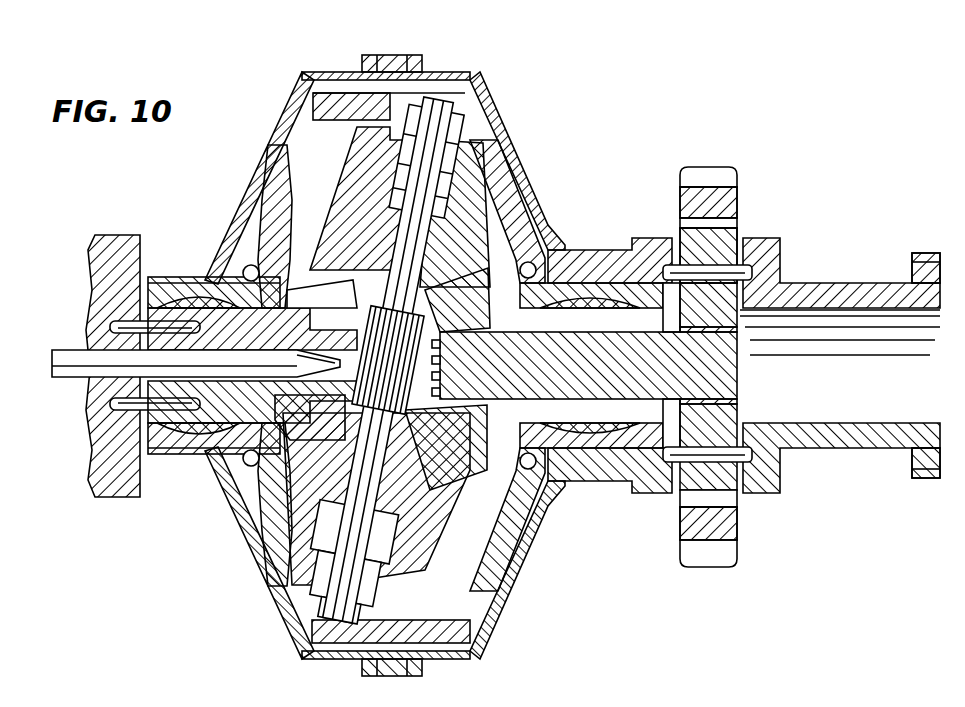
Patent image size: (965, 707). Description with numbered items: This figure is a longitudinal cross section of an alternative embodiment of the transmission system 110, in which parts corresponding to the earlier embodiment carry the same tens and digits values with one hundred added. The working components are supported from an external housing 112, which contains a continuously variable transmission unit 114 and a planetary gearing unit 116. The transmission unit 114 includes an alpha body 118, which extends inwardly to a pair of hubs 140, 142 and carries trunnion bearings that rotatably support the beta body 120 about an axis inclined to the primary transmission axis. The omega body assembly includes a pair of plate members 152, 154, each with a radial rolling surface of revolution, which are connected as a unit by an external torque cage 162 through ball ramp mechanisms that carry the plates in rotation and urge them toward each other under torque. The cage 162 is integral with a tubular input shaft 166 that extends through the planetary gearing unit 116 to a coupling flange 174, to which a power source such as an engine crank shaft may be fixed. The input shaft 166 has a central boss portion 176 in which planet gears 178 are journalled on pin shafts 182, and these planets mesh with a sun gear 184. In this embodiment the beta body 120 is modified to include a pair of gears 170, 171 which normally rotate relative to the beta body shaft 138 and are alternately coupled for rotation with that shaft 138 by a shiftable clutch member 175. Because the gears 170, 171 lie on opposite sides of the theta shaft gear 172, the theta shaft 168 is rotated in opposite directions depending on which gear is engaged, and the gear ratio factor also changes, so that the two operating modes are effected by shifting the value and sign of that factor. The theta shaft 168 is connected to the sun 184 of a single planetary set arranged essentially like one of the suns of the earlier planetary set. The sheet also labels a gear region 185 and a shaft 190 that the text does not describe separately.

The transmission system 110 is at (624, 120).
The housing 112 is at (125, 240).
The continuously variable transmission unit 114 is at (517, 122).
The planetary gearing unit 116 is at (727, 165).
The alpha body 118 is at (325, 95).
The beta body 120 is at (430, 559).
The beta body shaft 138 is at (376, 268).
The alpha body hub 140 is at (335, 215).
The alpha body hub 142 is at (405, 592).
The omega plate member 152 is at (283, 183).
The omega plate member 154 is at (510, 197).
The torque cage 162 is at (445, 76).
The tubular input shaft 166 is at (605, 230).
The theta shaft 168 is at (740, 378).
The gear 170 is at (352, 300).
The gear 171 is at (342, 403).
The theta shaft gear 172 is at (430, 440).
The coupling flange 174 is at (930, 253).
The shiftable clutch member 175 is at (358, 335).
The central boss portion 176 is at (782, 240).
The planet gears 178 is at (737, 250).
The pin shafts 182 is at (752, 273).
The sun gear 184 is at (740, 333).
The gear teeth 185 is at (737, 200).
The drive shaft 190 is at (68, 352).